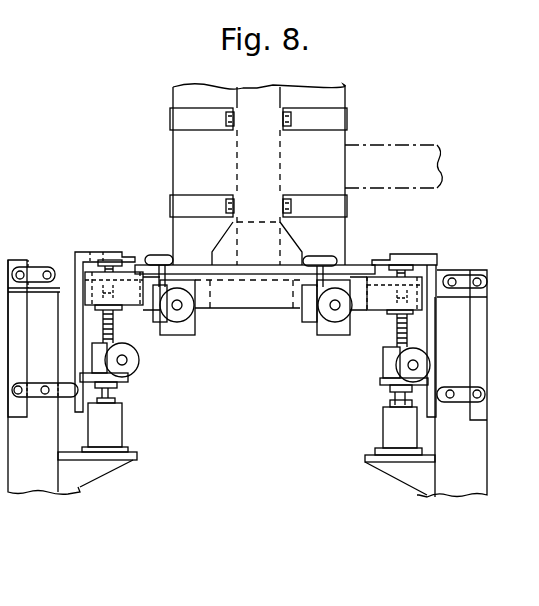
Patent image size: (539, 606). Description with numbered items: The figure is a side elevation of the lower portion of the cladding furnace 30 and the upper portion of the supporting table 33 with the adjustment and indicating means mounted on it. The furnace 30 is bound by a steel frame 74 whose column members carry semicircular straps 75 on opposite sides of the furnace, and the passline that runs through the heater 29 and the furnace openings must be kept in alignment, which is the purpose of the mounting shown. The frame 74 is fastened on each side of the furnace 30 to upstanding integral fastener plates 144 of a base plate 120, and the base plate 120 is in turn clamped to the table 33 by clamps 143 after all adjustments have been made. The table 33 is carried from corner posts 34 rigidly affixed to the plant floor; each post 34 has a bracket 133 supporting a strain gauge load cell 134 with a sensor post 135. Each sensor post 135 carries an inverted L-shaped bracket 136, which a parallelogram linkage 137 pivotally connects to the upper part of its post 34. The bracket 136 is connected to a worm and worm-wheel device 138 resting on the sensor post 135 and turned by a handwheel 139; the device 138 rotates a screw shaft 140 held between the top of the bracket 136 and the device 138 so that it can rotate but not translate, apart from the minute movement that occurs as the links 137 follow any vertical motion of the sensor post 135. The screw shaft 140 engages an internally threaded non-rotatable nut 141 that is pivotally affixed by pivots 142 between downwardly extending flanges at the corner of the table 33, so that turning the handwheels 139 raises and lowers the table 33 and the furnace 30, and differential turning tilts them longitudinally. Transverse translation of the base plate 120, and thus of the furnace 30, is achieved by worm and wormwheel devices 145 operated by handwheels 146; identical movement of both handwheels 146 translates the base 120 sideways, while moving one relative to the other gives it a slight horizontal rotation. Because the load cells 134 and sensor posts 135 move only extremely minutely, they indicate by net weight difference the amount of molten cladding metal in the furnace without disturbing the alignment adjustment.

The heater 29 is at (374, 145).
The cladding furnace 30 is at (205, 175).
The table 33 is at (238, 299).
The corner posts 34 is at (478, 483).
The steel frame 74 is at (242, 153).
The semicircular straps 75 is at (183, 117).
The base plate 120 is at (352, 263).
The brackets 133 is at (108, 470).
The strain gauge load cell 134 is at (122, 430).
The sensor post 135 is at (112, 395).
The inverted L-shaped bracket 136 is at (40, 272).
The parallelogram linkage 137 is at (50, 397).
The worm and worm-wheel device 138 is at (128, 377).
The handwheel 139 is at (140, 360).
The screw shaft 140 is at (113, 329).
The nut 141 is at (90, 304).
The pivots 142 is at (92, 252).
The clamps 143 is at (134, 257).
The fastener plates 144 is at (232, 232).
The worm and wormwheel devices 145 is at (180, 318).
The handwheels 146 is at (157, 255).